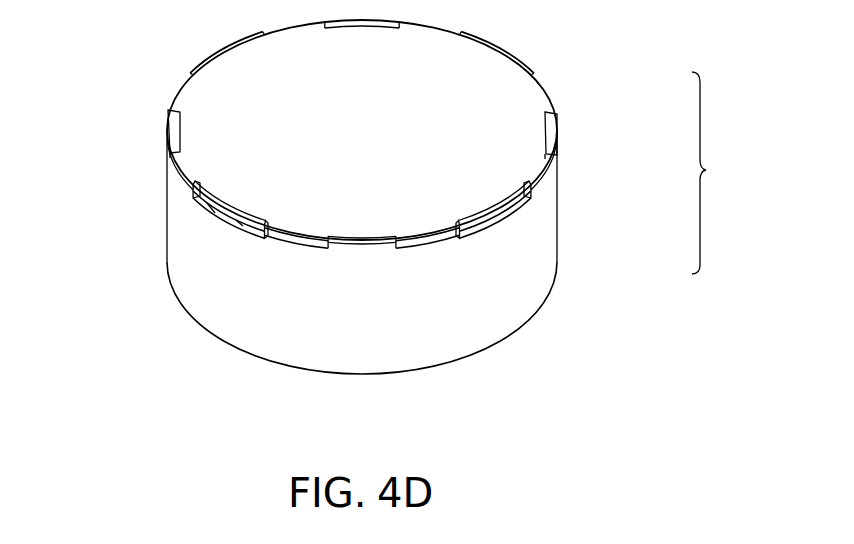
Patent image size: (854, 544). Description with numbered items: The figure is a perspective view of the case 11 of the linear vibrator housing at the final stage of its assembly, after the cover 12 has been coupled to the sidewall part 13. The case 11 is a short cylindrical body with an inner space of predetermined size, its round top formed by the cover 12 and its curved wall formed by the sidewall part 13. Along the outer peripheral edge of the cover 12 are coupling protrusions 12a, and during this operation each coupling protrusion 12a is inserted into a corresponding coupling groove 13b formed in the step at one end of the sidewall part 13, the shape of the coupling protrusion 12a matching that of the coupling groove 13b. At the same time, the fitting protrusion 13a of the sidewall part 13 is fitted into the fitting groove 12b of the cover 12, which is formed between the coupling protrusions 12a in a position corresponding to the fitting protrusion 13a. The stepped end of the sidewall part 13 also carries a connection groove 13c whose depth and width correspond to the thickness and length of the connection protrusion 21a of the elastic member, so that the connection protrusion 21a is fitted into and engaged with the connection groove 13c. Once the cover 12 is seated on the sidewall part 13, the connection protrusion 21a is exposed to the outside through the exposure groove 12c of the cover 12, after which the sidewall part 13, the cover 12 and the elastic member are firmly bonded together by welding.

The case 11 is at (717, 173).
The cover 12 is at (490, 104).
The coupling protrusion 12a is at (186, 95).
The fitting groove 12b is at (172, 125).
The exposure groove 12c is at (205, 204).
The sidewall part 13 is at (545, 250).
The fitting protrusion 13a is at (170, 143).
The coupling groove 13b is at (263, 232).
The connection groove 13c is at (493, 232).
The connection protrusion 21a is at (228, 222).